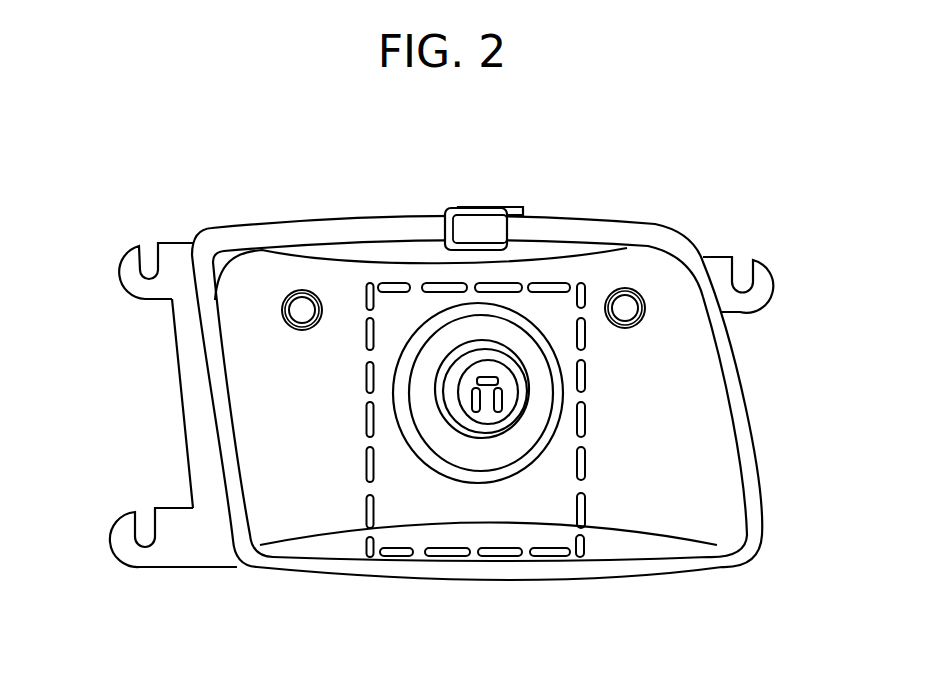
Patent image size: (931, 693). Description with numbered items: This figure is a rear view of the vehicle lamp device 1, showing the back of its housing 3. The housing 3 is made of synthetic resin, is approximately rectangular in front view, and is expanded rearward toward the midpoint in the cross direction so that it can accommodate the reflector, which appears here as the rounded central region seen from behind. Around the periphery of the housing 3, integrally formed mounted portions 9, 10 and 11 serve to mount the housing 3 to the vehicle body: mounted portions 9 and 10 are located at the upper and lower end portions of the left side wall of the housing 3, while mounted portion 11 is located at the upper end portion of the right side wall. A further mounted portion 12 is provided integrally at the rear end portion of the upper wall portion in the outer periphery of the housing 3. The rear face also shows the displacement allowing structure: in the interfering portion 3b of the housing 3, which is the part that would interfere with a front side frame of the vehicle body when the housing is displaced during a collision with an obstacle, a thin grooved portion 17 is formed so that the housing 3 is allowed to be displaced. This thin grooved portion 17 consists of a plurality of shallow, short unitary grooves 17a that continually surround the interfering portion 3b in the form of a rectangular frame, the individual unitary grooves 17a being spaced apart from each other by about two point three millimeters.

The vehicle lamp device 1 is at (237, 168).
The housing 3 is at (698, 400).
The interfering portion 3b is at (428, 508).
The mounted portion 9 is at (130, 272).
The mounted portion 10 is at (125, 530).
The mounted portion 11 is at (767, 280).
The mounted portion 12 is at (478, 232).
The thin grooved portion 17 is at (447, 403).
The unitary grooves 17a is at (510, 288).